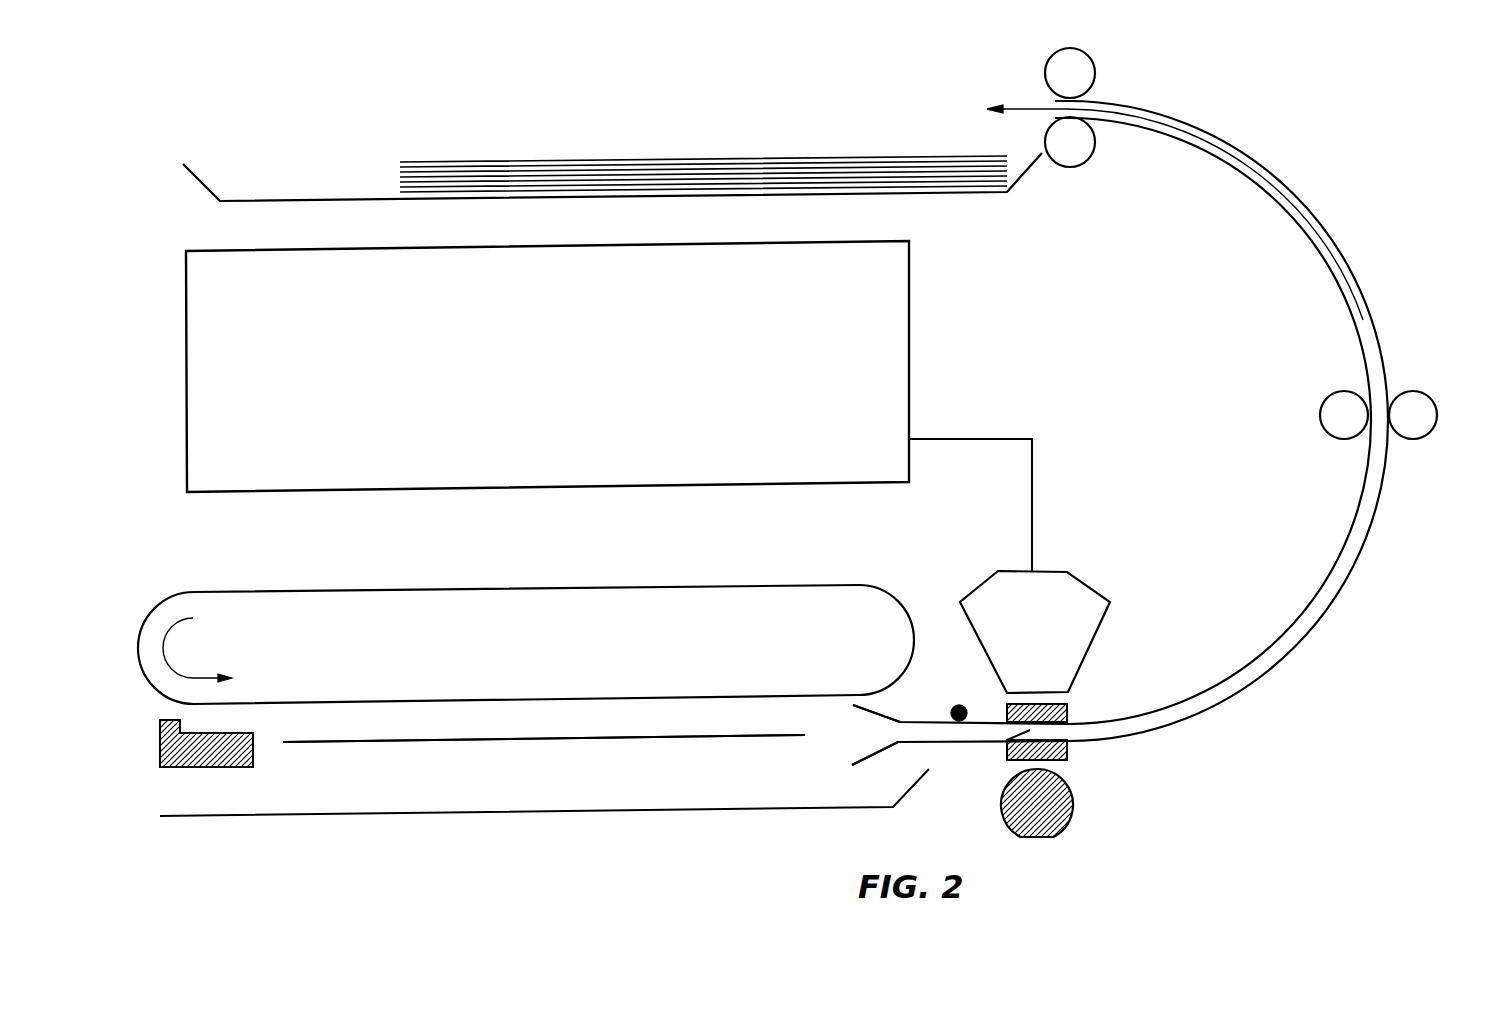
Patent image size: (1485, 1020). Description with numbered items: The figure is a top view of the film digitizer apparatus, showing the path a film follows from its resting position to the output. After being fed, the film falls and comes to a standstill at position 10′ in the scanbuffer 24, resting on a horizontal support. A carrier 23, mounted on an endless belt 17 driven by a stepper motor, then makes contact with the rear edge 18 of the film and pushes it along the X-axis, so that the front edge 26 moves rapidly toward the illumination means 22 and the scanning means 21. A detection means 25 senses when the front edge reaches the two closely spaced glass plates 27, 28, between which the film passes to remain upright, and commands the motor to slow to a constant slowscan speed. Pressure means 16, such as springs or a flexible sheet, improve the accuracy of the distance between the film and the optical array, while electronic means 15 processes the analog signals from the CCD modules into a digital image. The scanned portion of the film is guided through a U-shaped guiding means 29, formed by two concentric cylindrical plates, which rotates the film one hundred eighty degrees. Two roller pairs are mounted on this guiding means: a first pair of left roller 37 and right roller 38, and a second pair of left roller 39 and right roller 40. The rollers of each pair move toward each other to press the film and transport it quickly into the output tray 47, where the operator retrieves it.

The output tray 47 is at (955, 195).
The left roller 39 is at (1078, 76).
The right roller 40 is at (1085, 150).
The U-shaped guiding means 29 is at (1303, 632).
The left roller 37 is at (1338, 406).
The right roller 38 is at (1405, 406).
The electronic means 15 is at (198, 276).
The scanning means 21 is at (1075, 613).
The endless belt 17 is at (518, 643).
The carrier 23 is at (205, 767).
The rear edge 18 is at (283, 748).
The film position 10′ is at (605, 742).
The front edge 26 is at (805, 735).
The pressure means 16 is at (1007, 741).
The detection means 25 is at (957, 704).
The scanbuffer 24 is at (575, 815).
The glass plate 27 is at (1068, 712).
The glass plate 28 is at (1068, 750).
The illumination means 22 is at (1057, 815).